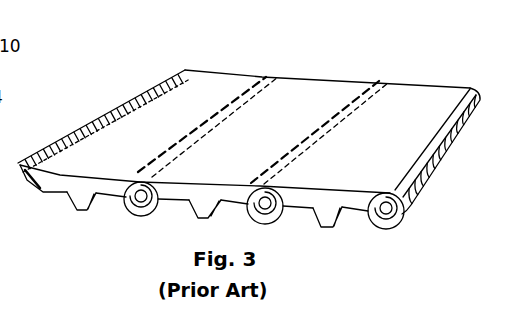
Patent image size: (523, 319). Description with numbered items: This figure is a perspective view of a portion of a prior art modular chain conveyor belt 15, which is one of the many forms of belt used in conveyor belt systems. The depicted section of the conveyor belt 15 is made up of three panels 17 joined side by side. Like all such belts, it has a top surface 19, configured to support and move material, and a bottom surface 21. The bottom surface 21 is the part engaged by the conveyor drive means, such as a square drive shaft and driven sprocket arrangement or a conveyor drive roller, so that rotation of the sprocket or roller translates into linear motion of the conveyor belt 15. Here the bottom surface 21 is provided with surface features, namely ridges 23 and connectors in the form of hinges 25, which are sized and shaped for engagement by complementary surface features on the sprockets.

The conveyor belt 15 is at (421, 32).
The panels 17 is at (204, 80).
The top surface 19 is at (280, 142).
The bottom surface 21 is at (297, 209).
The ridges 23 is at (328, 228).
The hinges 25 is at (141, 216).